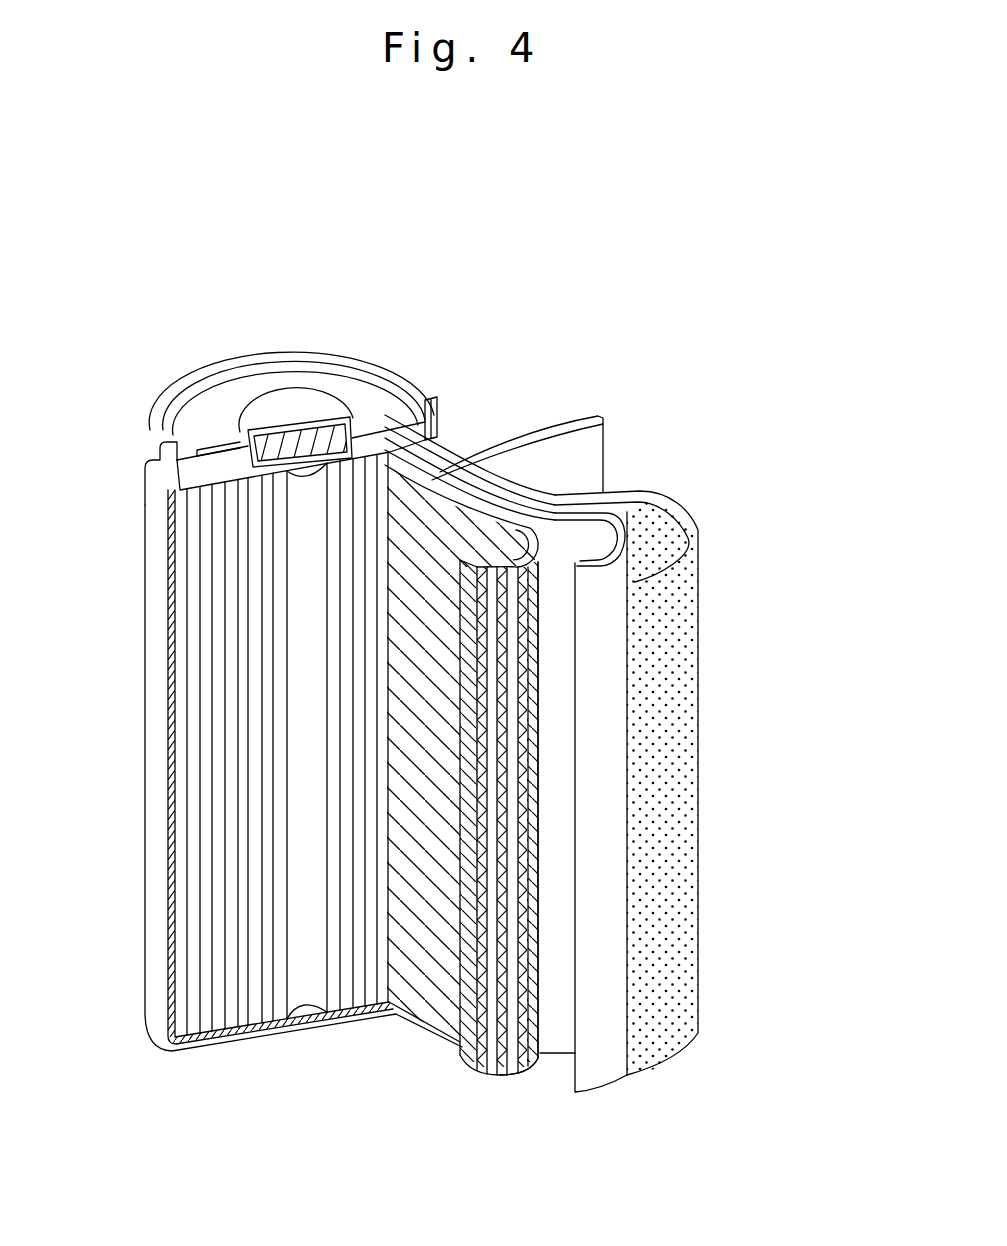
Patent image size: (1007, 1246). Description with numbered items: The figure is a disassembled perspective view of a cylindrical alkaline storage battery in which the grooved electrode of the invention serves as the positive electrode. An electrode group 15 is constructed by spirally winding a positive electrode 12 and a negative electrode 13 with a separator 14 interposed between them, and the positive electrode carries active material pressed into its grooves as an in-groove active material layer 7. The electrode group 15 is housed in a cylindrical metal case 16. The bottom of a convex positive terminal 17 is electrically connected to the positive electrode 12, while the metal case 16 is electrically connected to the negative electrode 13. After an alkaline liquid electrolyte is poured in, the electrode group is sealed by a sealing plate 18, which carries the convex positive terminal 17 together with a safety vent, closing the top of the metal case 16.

The in-groove active material layer 7 is at (478, 897).
The positive electrode 12 is at (540, 970).
The negative electrode 13 is at (663, 688).
The separator 14 is at (582, 475).
The electrode group 15 is at (822, 633).
The metal case 16 is at (157, 802).
The positive terminal 17 is at (298, 400).
The sealing plate 18 is at (227, 412).